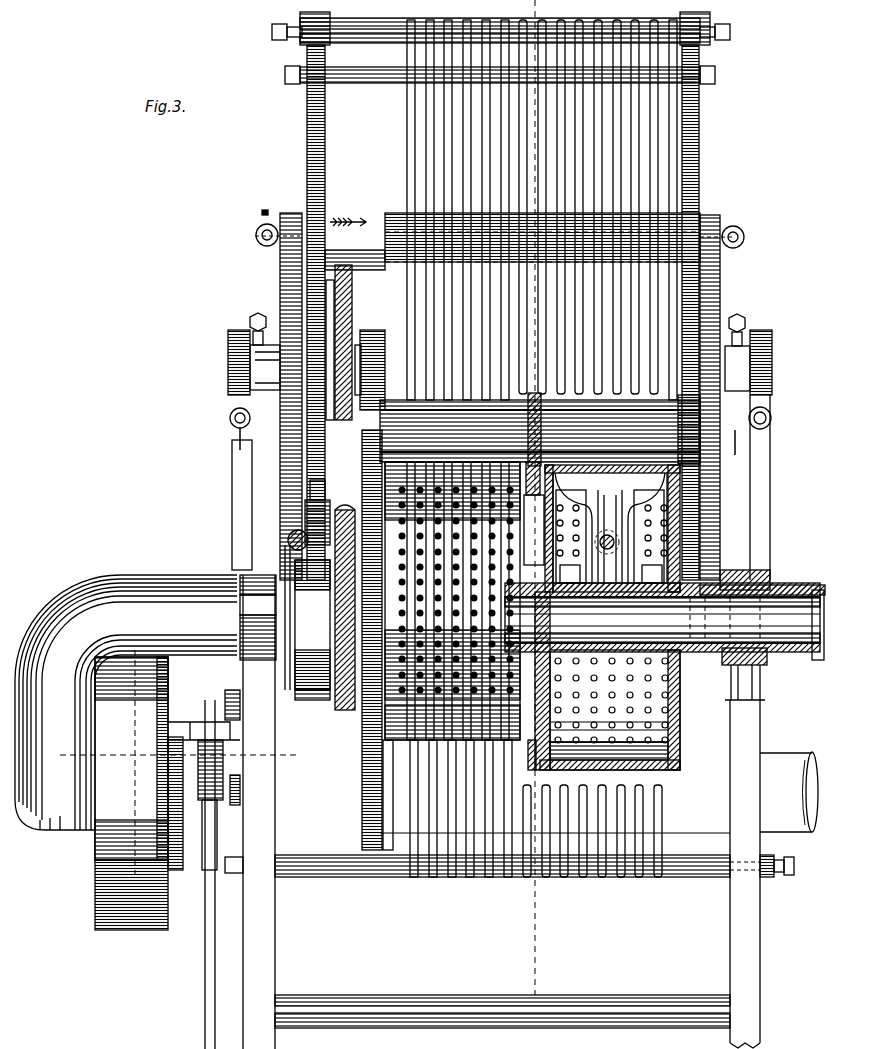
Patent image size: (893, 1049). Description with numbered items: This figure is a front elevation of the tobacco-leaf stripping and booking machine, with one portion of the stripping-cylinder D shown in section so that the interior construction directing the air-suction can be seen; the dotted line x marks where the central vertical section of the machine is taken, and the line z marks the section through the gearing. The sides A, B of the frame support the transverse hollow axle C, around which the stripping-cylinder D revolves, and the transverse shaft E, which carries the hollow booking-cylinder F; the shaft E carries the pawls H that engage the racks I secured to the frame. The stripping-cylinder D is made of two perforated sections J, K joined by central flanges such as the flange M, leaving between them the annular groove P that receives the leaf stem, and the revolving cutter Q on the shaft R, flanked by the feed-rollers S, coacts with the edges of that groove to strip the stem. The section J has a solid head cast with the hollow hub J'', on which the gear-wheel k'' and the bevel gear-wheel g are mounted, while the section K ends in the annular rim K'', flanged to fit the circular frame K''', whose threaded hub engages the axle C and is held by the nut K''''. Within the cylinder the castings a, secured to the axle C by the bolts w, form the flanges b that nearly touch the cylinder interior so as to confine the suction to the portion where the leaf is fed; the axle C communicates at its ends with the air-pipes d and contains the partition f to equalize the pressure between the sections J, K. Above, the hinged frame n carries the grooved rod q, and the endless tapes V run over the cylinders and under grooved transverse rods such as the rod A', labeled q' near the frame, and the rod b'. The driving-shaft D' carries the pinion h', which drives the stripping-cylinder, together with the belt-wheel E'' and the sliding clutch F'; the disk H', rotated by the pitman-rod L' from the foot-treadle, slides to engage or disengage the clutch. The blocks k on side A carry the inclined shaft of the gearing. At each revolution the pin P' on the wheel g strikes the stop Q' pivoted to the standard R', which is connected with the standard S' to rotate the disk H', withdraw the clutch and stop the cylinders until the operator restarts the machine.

The section line X X x is at (543, 497).
The rod q is at (501, 48).
The hinged frame n is at (512, 312).
The grooved transverse rod A' is at (480, 395).
The endless tapes V is at (424, 880).
The booking-cylinder F is at (512, 235).
The blocks k is at (316, 382).
The section line Z Z z is at (326, 497).
The transverse shaft E is at (370, 359).
The pawls H is at (500, 451).
The racks I is at (487, 456).
The feed-rollers S is at (540, 431).
The revolving cutter Q is at (544, 429).
The shaft R is at (689, 430).
The section of stripping-cylinder J is at (377, 640).
The pinion-wheel h' is at (391, 795).
The flange M is at (574, 710).
The annular rim K'' is at (626, 609).
The circular frame K''' is at (629, 554).
The nut K'''' is at (752, 624).
The flanges b is at (610, 523).
The castings a is at (607, 528).
The bolts w is at (612, 544).
The transverse hollow axle C is at (664, 621).
The partition f is at (552, 612).
The section of stripping-cylinder K is at (610, 717).
The stripping-cylinder D is at (624, 714).
The annular groove P is at (539, 766).
The air-pipes d is at (416, 703).
The driving-shaft D' is at (180, 762).
The belt-wheel E'' is at (131, 906).
The sliding clutch F' is at (178, 823).
The disk H' is at (210, 805).
The standard S' is at (204, 711).
The pitman-rod L' is at (200, 874).
The side of frame A is at (477, 812).
The side of frame B is at (745, 874).
The grooved transverse rod b' is at (736, 877).
The standard R' is at (258, 617).
The hollow hub J'' is at (303, 619).
The bevel gear-wheel g is at (330, 735).
The gear-wheel k'' is at (331, 512).
The stop Q' is at (283, 528).
The pin P' is at (312, 695).
The rod q' is at (236, 505).